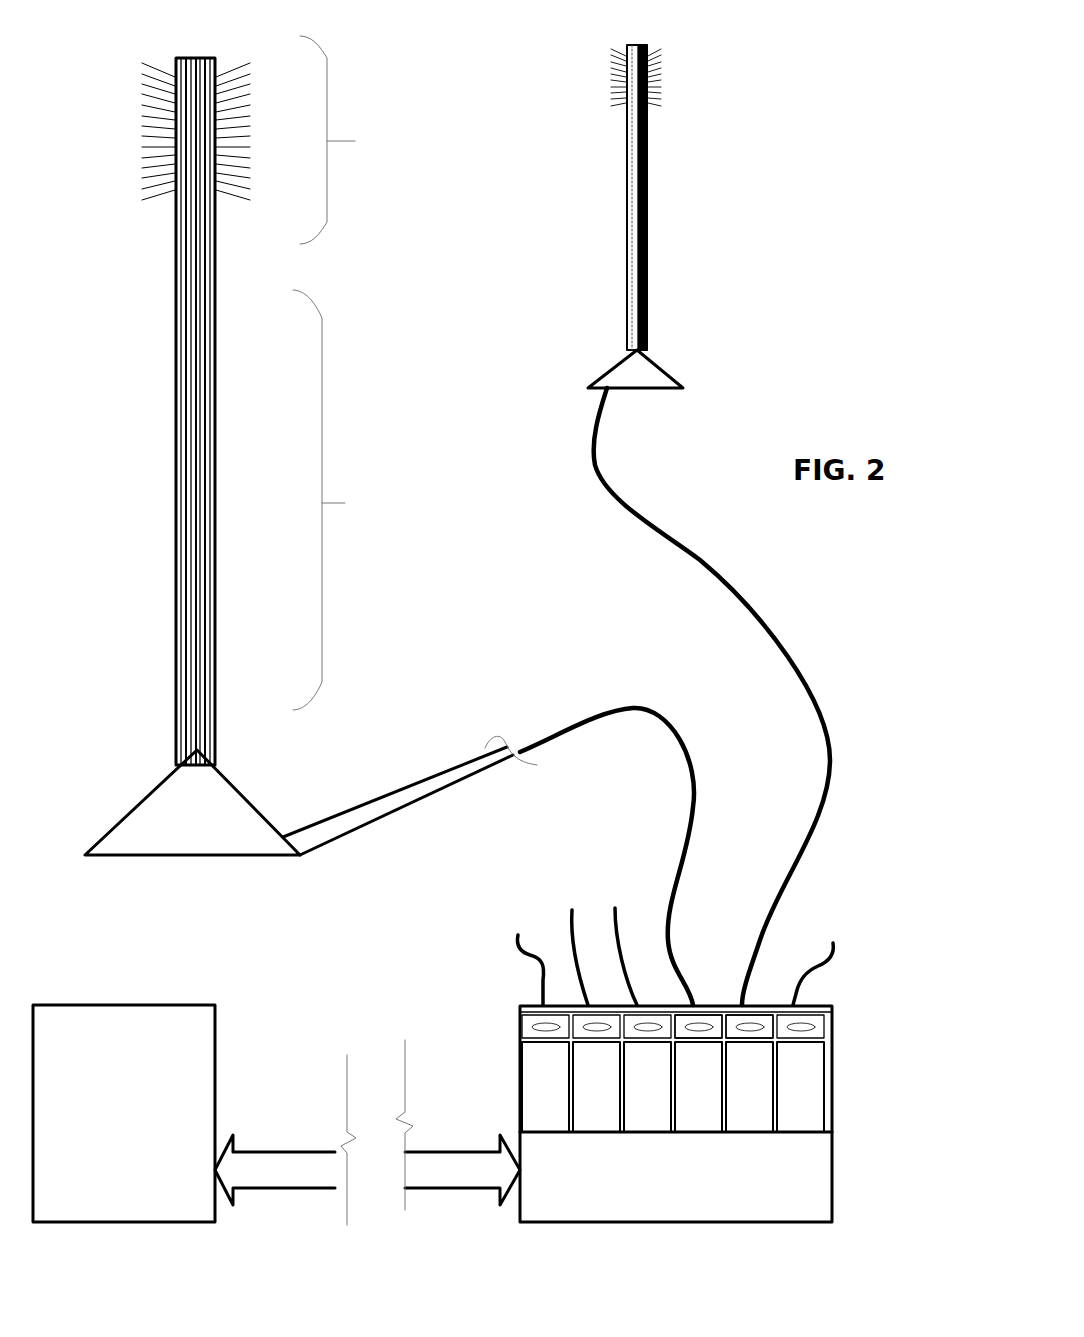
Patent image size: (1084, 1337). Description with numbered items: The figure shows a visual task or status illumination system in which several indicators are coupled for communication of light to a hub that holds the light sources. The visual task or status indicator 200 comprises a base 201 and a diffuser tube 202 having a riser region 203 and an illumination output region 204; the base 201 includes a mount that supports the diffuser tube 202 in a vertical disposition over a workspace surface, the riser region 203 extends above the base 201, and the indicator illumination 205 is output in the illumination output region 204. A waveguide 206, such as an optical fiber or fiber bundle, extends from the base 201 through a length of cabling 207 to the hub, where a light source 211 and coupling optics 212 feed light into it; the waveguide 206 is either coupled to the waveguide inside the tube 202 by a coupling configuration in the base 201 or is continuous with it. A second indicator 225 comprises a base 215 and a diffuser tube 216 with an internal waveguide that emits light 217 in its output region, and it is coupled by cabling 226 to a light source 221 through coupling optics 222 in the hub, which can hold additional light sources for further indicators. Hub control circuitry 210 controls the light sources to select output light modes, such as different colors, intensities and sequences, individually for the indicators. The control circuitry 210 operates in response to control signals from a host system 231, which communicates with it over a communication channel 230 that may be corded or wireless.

The visual task or status indicator 200 is at (138, 400).
The base 201 is at (237, 806).
The diffuser tube 202 is at (175, 493).
The riser region 203 is at (345, 503).
The illumination output region 204 is at (355, 141).
The indicator illumination 205 is at (150, 97).
The waveguide 206 is at (368, 812).
The cabling 207 is at (680, 840).
The hub control circuitry 210 is at (803, 1175).
The light source 211 is at (718, 1090).
The coupling optics 212 is at (702, 1018).
The base 215 is at (657, 370).
The diffuser tube 216 is at (648, 220).
The light 217 is at (652, 95).
The light source 221 is at (760, 1053).
The coupling optics 222 is at (757, 1020).
The indicator 225 is at (576, 268).
The cabling 226 is at (775, 640).
The communication channel 230 is at (277, 1152).
The host system 231 is at (215, 1042).